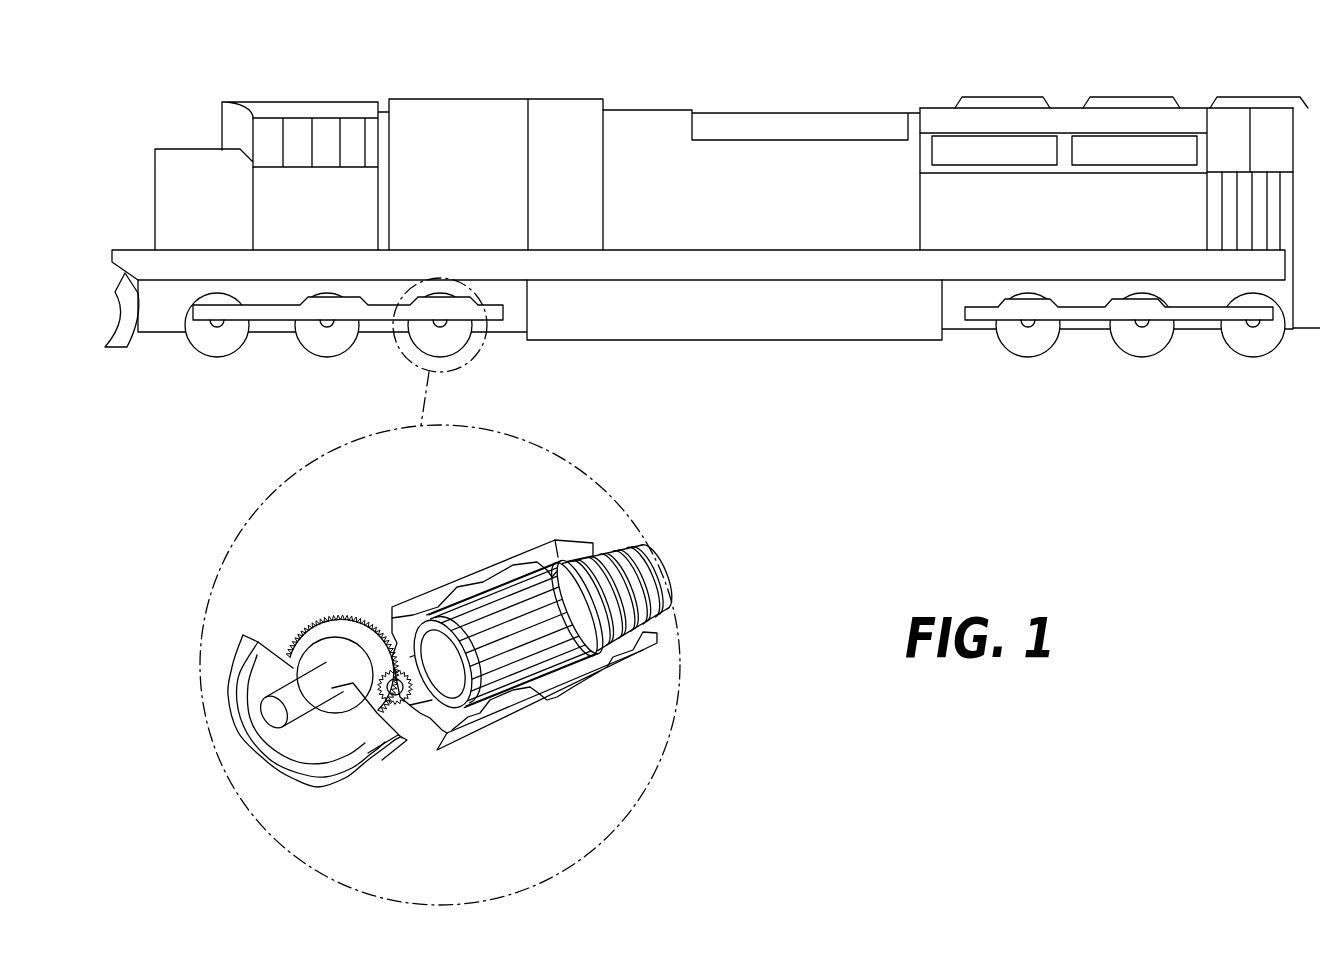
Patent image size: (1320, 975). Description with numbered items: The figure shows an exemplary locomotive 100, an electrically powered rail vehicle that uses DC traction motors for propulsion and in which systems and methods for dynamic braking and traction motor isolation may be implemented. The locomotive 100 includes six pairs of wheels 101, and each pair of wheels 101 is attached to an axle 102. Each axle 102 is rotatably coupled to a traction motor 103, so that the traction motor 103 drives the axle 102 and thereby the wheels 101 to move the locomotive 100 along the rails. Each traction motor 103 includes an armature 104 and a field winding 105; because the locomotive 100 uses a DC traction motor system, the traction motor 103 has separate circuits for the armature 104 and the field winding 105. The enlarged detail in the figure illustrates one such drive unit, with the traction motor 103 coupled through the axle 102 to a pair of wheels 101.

The locomotive 100 is at (87, 231).
The wheels 101 is at (327, 778).
The axle 102 is at (243, 770).
The traction motor 103 is at (567, 540).
The armature 104 is at (517, 652).
The field winding 105 is at (543, 577).